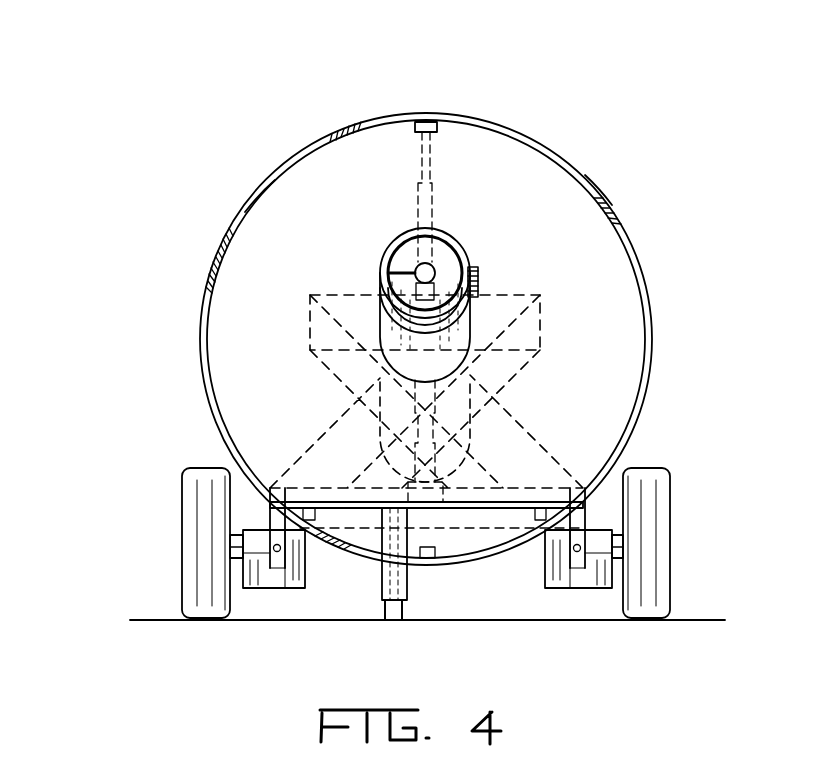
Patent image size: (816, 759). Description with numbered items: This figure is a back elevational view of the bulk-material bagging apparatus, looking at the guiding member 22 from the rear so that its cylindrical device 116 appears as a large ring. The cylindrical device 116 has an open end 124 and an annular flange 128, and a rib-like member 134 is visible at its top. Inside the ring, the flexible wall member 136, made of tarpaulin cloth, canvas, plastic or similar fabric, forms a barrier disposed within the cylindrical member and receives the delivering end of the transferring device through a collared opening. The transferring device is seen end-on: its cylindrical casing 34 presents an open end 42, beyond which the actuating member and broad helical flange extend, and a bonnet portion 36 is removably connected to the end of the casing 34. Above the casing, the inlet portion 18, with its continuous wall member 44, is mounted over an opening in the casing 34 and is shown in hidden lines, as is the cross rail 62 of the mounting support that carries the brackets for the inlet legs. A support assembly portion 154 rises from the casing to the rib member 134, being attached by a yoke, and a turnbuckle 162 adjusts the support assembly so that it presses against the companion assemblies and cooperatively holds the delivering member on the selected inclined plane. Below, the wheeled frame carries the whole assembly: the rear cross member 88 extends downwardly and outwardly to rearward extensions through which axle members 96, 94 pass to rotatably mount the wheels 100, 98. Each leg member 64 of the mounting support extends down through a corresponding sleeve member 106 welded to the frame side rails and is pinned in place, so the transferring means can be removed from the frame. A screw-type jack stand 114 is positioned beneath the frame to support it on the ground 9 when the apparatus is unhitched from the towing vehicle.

The guiding member 22 is at (160, 230).
The cylindrical device 116 is at (188, 310).
The open end 124 is at (258, 198).
The annular flange 128 is at (597, 193).
The rib-like member 134 is at (427, 122).
The portion of support assembly 154 is at (428, 165).
The turnbuckle 162 is at (430, 202).
The wall member 136 is at (442, 255).
The open end 42 is at (453, 268).
The bonnet portion 36 is at (468, 310).
The cylindrical casing 34 is at (457, 445).
The inlet portion 18 is at (560, 290).
The wall member 44 is at (530, 323).
The cross rail 62 is at (520, 490).
The sleeve member 106 is at (580, 523).
The leg member 64 is at (277, 553).
The axle member 96 is at (240, 533).
The axle member 94 is at (618, 547).
The wheel 100 is at (197, 557).
The wheel 98 is at (655, 566).
The rear cross member 88 is at (458, 522).
The jack stand 114 is at (402, 610).
The ground surface 9 is at (350, 633).